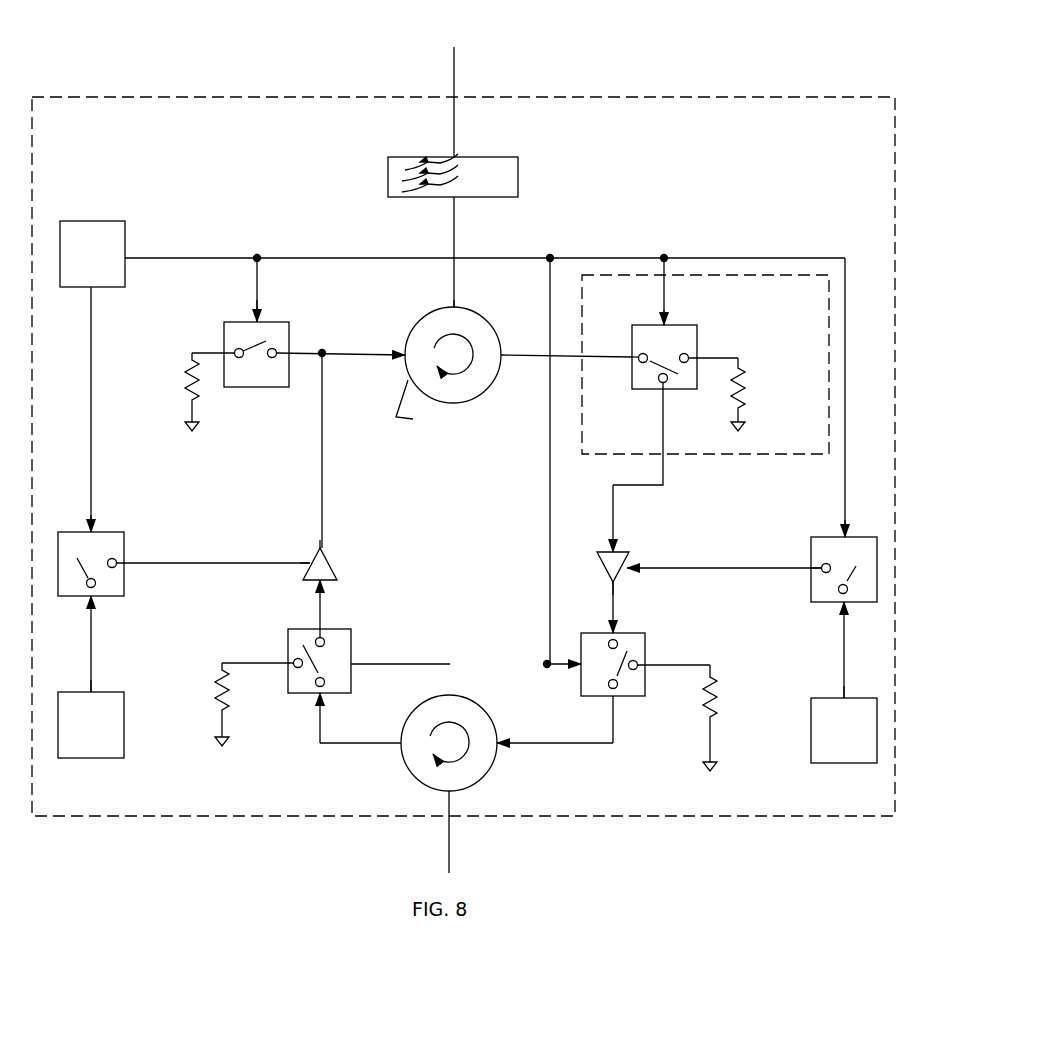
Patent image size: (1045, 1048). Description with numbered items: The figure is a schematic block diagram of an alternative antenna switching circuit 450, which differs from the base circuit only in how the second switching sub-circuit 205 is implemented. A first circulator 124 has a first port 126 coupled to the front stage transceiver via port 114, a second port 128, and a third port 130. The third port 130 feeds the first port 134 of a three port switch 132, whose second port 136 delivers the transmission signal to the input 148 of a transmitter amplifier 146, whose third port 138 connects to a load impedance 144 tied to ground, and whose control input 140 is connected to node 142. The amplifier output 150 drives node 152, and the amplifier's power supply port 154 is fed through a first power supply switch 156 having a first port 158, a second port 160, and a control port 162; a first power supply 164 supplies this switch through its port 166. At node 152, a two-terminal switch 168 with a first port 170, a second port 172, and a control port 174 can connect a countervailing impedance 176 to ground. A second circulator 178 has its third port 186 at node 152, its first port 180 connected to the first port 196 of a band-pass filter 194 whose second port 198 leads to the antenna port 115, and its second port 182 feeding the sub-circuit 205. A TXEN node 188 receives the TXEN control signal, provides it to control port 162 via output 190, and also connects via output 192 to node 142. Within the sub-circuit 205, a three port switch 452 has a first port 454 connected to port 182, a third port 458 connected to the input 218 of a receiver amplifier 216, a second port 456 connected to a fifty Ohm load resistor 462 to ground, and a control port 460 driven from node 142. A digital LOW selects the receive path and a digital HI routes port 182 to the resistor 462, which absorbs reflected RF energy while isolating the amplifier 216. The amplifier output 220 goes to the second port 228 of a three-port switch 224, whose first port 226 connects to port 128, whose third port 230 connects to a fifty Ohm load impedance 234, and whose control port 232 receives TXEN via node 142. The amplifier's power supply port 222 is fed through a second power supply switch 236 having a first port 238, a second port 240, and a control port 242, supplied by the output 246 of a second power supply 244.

The antenna switching circuit 450 is at (818, 66).
The antenna port 115 is at (452, 94).
The second port of band-pass filter 198 is at (452, 157).
The band-pass filter 194 is at (453, 175).
The first port of band-pass filter 196 is at (455, 200).
The TXEN node 188 is at (92, 254).
The control output 192 is at (127, 255).
The node 142 is at (258, 255).
The control output 190 is at (89, 290).
The two-terminal switch 168 is at (298, 317).
The control port of switch 174 is at (255, 318).
The second port of switch 172 is at (223, 352).
The first port of switch 170 is at (291, 352).
The countervailing impedance 176 is at (166, 364).
The node 152 is at (320, 384).
The second circulator 178 is at (420, 312).
The first port of second circulator 180 is at (455, 307).
The second port of second circulator 182 is at (502, 352).
The third port of second circulator 186 is at (425, 405).
The first power supply switch 156 is at (133, 609).
The control port of first power supply switch 162 is at (89, 531).
The second port of first power supply switch 160 is at (126, 566).
The first port of first power supply switch 158 is at (89, 601).
The first power supply 164 is at (91, 725).
The port of first power supply 166 is at (89, 690).
The transmitter amplifier 146 is at (338, 566).
The power supply port of transmitter amplifier 154 is at (310, 561).
The output of transmitter amplifier 150 is at (323, 545).
The input of transmitter amplifier 148 is at (324, 594).
The three port switch 132 is at (370, 648).
The second port of three port switch 136 is at (318, 627).
The third port of three port switch 138 is at (286, 661).
The control input of three port switch 140 is at (355, 666).
The first port of three port switch 134 is at (318, 695).
The load impedance 144 is at (206, 672).
The first circulator 124 is at (401, 776).
The third port of first circulator 130 is at (398, 741).
The second port of first circulator 128 is at (500, 741).
The first port of first circulator 126 is at (451, 792).
The port 114 is at (448, 820).
The three-port switch 224 is at (646, 712).
The second port of three-port switch 228 is at (616, 631).
The third port of three-port switch 230 is at (648, 663).
The control port of three-port switch 232 is at (579, 667).
The first port of three-port switch 226 is at (616, 703).
The load impedance 234 is at (729, 681).
The receiver amplifier 216 is at (637, 554).
The input of receiver amplifier 218 is at (611, 550).
The output of receiver amplifier 220 is at (611, 582).
The power supply port of receiver amplifier 222 is at (627, 572).
The second power supply switch 236 is at (793, 588).
The control port of second power supply switch 242 is at (842, 535).
The second port of second power supply switch 240 is at (812, 568).
The first port of second power supply switch 238 is at (842, 603).
The second power supply 244 is at (844, 730).
The output of second power supply 246 is at (842, 690).
The second switching sub-circuit 205 is at (707, 456).
The three port switch 452 is at (719, 326).
The first port of three port switch 454 is at (633, 357).
The control port of three port switch 460 is at (666, 322).
The second port of three port switch 456 is at (700, 357).
The third port of three port switch 458 is at (667, 389).
The load resistor 462 is at (753, 377).